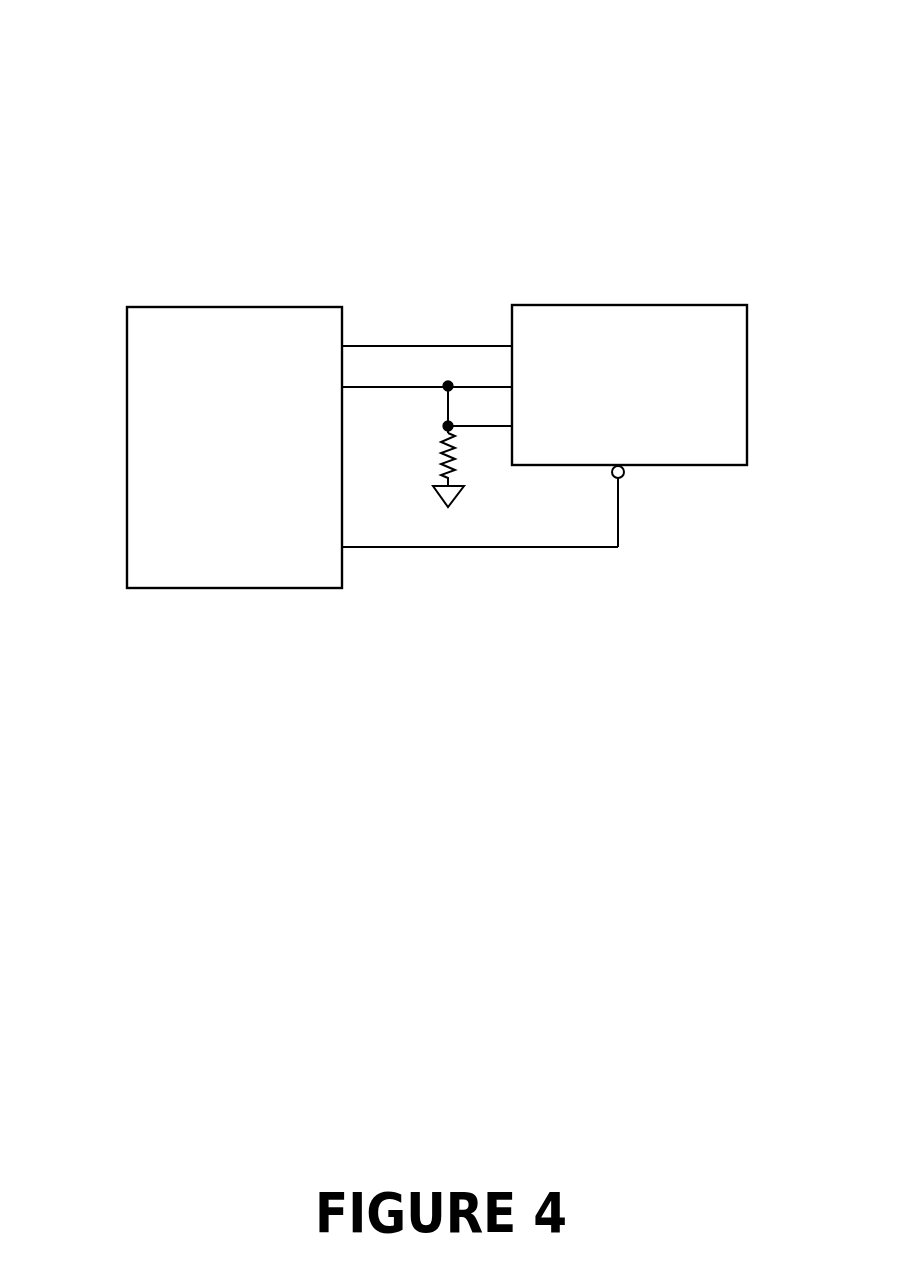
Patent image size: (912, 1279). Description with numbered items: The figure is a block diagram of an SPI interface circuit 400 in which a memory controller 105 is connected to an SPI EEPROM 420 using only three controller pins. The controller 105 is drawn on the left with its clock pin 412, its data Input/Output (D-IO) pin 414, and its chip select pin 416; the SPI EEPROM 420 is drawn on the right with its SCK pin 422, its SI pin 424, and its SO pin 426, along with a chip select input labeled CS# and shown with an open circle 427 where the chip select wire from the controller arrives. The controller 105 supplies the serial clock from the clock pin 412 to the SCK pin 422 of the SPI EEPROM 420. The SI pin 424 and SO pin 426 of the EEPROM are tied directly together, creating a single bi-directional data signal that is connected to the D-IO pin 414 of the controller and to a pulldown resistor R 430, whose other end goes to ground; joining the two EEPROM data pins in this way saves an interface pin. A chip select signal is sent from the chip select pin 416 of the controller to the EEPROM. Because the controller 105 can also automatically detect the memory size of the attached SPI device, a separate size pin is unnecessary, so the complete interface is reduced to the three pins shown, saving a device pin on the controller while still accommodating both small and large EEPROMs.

The SPI interface circuit 400 is at (60, 37).
The controller 105 is at (252, 479).
The clock pin 412 is at (278, 347).
The data Input/Output (D-IO) pin 414 is at (278, 387).
The chip select pin 416 is at (277, 547).
The SPI EEPROM 420 is at (727, 305).
The SCK pin 422 is at (532, 323).
The SI pin 424 is at (548, 388).
The SO pin 426 is at (533, 433).
The CS# pin 427 is at (630, 475).
The pulldown resistor R 430 is at (415, 467).